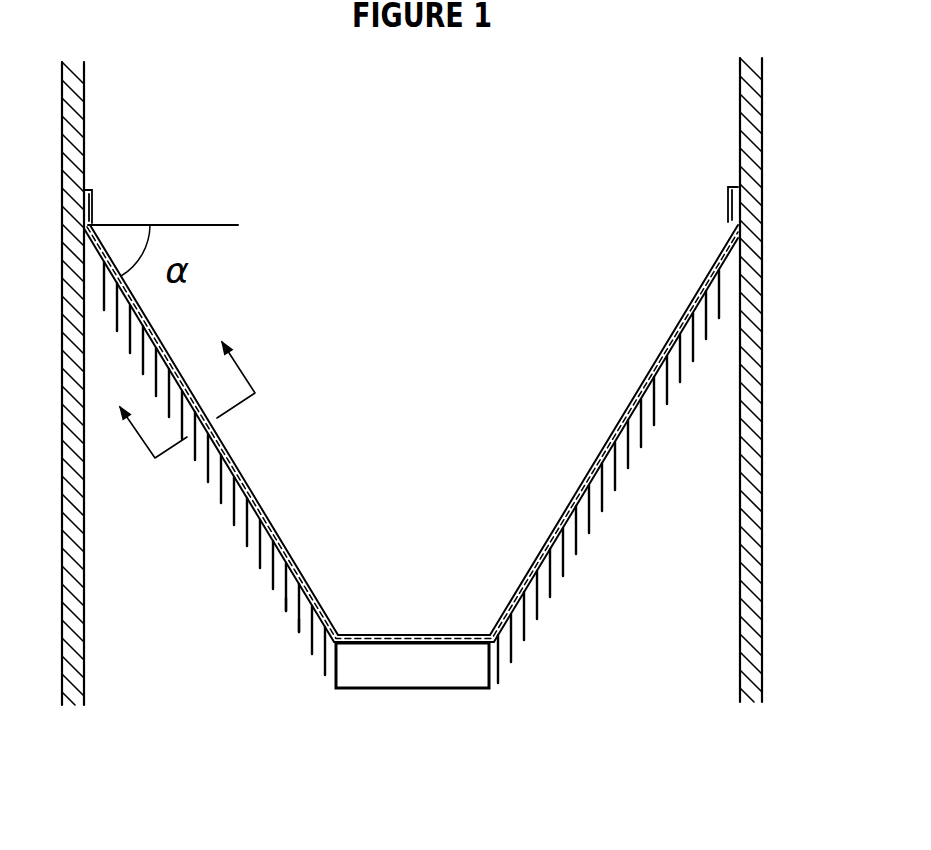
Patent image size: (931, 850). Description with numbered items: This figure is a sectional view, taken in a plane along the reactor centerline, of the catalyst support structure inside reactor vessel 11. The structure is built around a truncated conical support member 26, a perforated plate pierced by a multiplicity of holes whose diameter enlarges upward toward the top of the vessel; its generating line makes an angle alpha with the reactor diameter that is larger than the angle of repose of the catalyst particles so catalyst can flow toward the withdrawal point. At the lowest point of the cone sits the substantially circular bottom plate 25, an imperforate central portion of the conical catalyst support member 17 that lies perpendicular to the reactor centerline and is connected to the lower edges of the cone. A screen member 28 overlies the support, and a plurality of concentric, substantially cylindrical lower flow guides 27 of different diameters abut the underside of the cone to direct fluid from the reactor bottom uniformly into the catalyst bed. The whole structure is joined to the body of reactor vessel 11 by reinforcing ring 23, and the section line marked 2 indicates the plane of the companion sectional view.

The section line 2- 2 is at (182, 385).
The reactor vessel 11 is at (762, 408).
The conical catalyst support member 17 is at (385, 140).
The reinforcing ring 23 is at (95, 200).
The bottom plate 25 is at (483, 665).
The conical support member 26 is at (577, 490).
The lower flow guide 27 is at (288, 600).
The screen member 28 is at (538, 533).